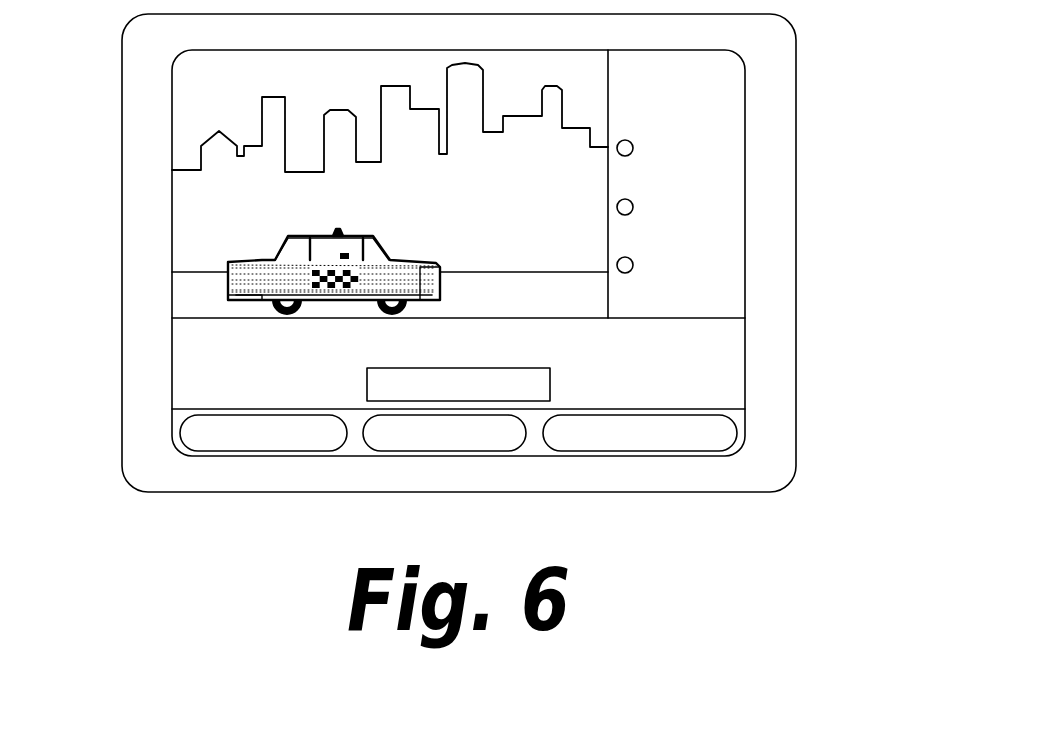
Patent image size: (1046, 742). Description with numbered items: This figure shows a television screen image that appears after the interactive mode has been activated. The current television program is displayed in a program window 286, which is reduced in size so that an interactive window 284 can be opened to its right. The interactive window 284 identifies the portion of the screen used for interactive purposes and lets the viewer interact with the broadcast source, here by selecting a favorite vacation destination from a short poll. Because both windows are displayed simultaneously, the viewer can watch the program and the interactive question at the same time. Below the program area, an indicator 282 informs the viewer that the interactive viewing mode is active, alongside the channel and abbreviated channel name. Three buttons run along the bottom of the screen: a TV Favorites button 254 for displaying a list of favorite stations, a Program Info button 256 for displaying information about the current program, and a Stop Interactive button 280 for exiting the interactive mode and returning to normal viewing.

The program window 286 is at (197, 83).
The interactive window 284 is at (722, 77).
The indicator 282 is at (555, 377).
The TV Favorites button 254 is at (247, 445).
The Program Info button 256 is at (443, 445).
The Stop Interactive button 280 is at (647, 445).